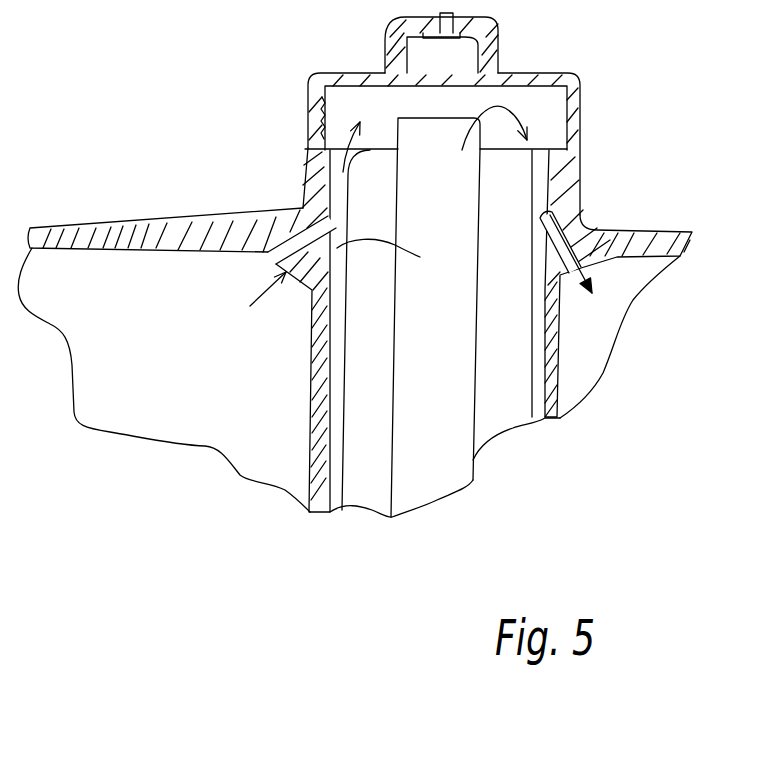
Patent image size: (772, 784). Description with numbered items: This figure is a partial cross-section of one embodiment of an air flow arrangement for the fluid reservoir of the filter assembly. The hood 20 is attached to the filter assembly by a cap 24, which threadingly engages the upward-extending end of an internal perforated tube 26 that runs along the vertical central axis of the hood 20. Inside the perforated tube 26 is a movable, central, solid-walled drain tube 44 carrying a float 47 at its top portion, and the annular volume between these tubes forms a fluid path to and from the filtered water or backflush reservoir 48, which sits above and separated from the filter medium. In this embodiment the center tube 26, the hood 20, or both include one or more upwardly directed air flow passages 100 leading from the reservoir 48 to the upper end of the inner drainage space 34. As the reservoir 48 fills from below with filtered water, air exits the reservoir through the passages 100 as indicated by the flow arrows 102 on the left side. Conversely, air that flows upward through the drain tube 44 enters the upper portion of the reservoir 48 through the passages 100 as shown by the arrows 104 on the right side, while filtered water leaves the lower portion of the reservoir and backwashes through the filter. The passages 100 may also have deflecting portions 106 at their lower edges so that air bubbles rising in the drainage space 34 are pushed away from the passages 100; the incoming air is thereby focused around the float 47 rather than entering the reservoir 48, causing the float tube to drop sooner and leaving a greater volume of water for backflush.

The hood 20 is at (103, 240).
The cap 24 is at (522, 70).
The internal perforated tube 26 is at (313, 382).
The inner drainage space 34 is at (563, 153).
The drain tube 44 is at (477, 395).
The float 47 is at (348, 480).
The filtered water or backflush reservoir 48 is at (117, 343).
The air flow passages 100 is at (298, 207).
The flow arrows 102 is at (262, 285).
The arrows 104 is at (518, 120).
The deflecting portions 106 is at (533, 238).